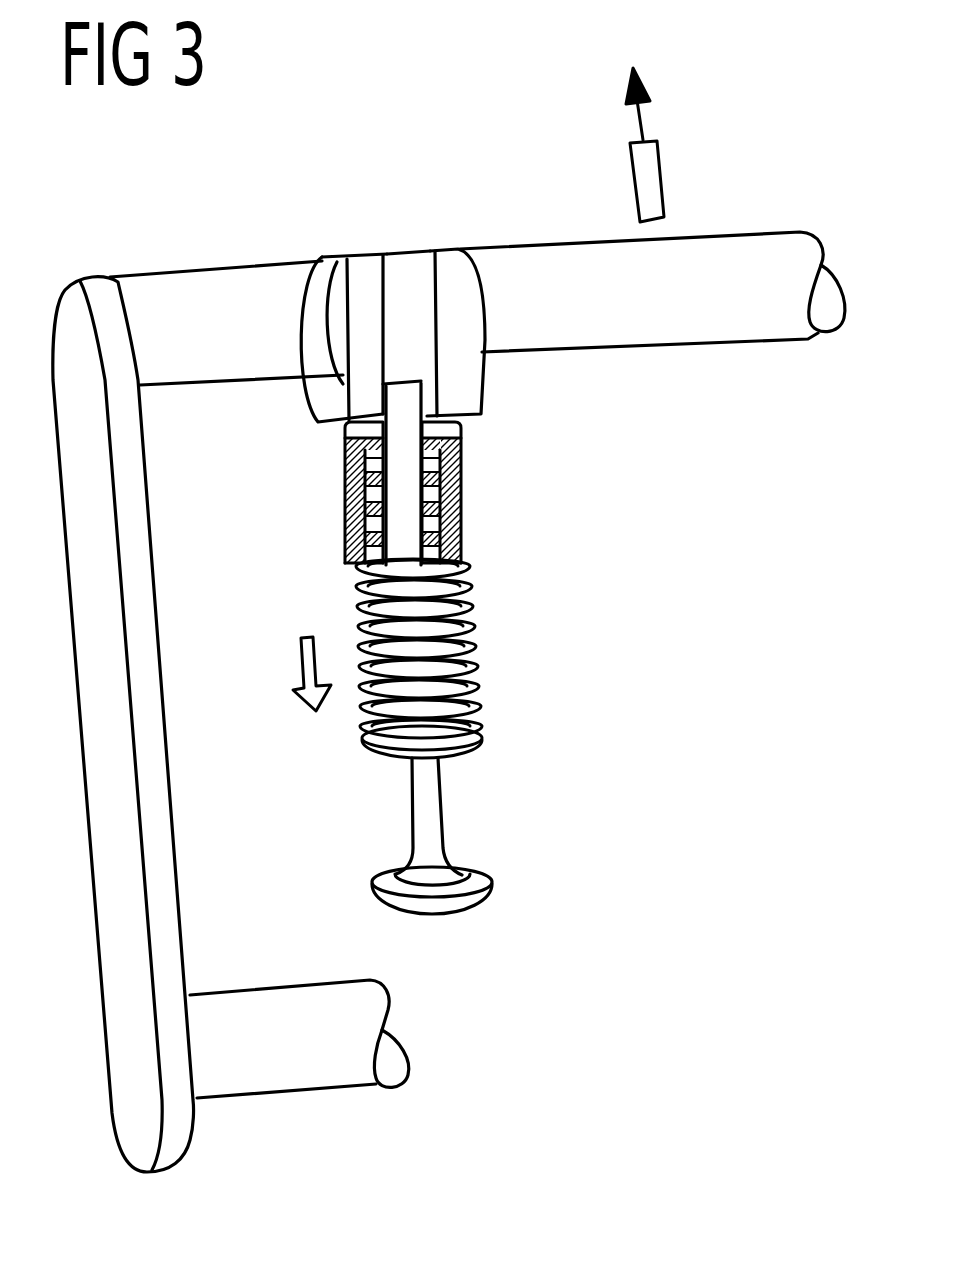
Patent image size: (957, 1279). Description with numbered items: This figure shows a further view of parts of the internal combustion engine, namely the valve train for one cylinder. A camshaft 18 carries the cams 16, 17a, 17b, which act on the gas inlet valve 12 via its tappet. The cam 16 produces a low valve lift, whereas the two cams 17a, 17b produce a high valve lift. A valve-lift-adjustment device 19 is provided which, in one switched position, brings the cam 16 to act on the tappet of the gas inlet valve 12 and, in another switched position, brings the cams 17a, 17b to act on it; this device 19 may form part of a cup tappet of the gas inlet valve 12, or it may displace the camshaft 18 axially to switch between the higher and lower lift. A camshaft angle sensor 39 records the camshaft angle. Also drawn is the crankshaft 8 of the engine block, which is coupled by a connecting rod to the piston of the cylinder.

The crankshaft 8 is at (322, 1072).
The gas inlet valve 12 is at (427, 817).
The cam 16 is at (412, 348).
The cam 17a is at (463, 373).
The cam 17b is at (307, 380).
The camshaft 18 is at (229, 295).
The valve-lift-adjustment device 19 is at (333, 436).
The camshaft angle sensor 39 is at (648, 177).